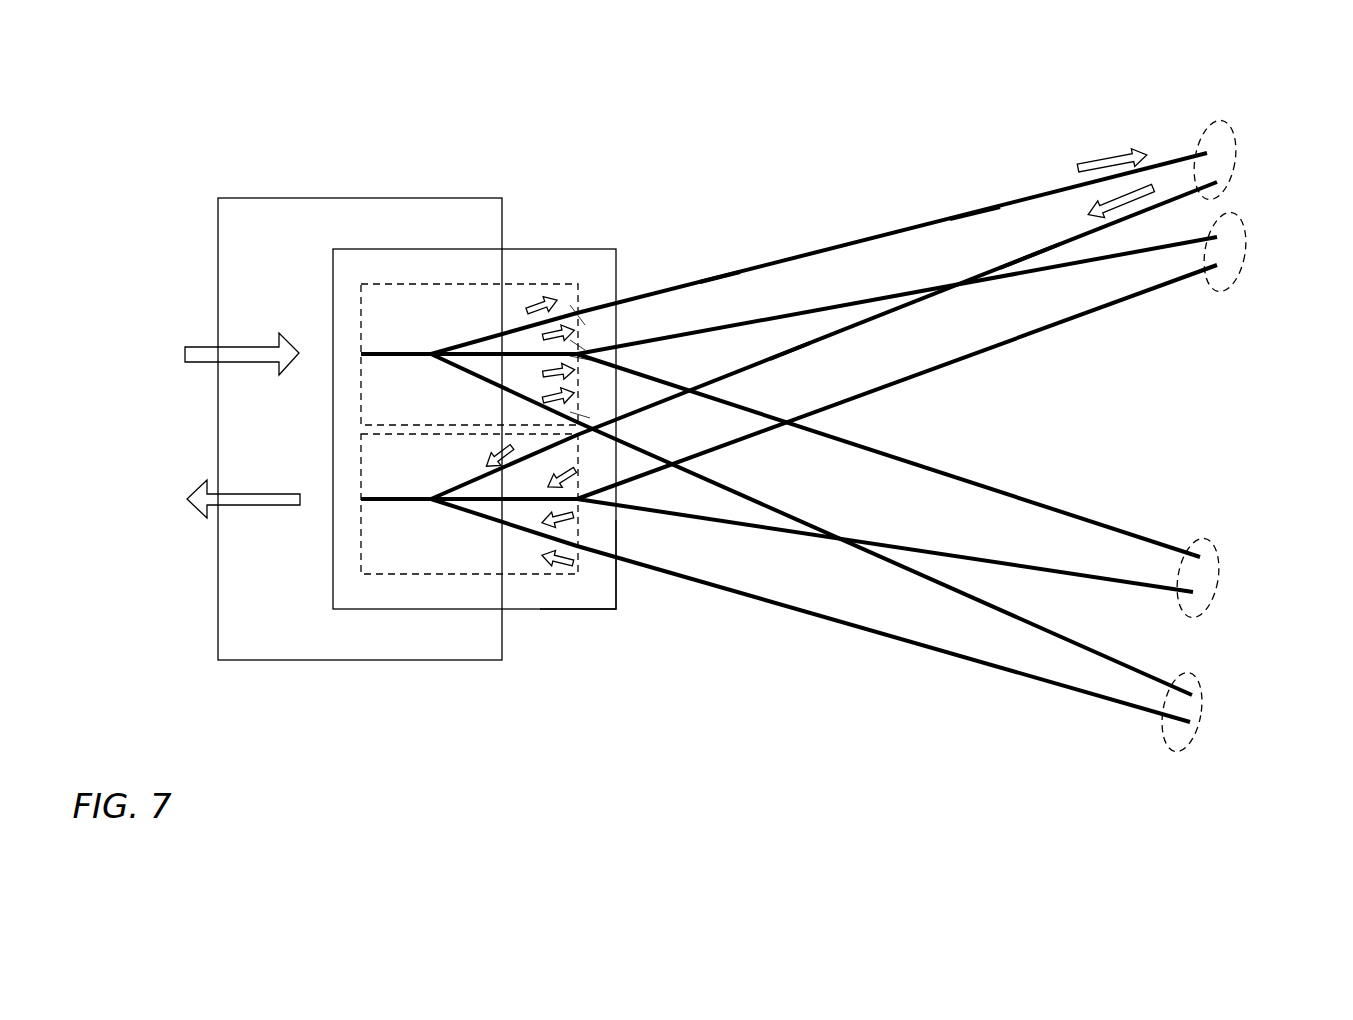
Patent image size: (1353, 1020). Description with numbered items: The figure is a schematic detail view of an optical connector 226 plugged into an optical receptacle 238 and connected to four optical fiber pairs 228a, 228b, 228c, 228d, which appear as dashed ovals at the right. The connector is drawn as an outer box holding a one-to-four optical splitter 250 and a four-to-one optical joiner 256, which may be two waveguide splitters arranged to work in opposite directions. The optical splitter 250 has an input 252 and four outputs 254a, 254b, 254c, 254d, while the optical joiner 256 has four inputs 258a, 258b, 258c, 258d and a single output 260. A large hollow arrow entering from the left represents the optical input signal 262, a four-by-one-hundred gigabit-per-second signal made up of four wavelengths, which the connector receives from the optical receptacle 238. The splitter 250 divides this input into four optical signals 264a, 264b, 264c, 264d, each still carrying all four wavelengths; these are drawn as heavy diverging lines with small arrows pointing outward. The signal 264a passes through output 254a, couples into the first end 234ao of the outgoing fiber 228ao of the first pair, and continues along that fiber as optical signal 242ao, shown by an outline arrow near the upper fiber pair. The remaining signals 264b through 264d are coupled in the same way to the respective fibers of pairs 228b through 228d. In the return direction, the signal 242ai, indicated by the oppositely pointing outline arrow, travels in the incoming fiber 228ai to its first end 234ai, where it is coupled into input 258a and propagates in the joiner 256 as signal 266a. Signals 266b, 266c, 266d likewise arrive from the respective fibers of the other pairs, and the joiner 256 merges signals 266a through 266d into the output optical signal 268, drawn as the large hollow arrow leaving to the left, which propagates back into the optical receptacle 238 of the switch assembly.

The optical connector 226 is at (605, 610).
The optical fiber pair 228a is at (1237, 163).
The optical fiber pair 228b is at (1247, 255).
The optical fiber pair 228c is at (1220, 581).
The optical fiber pair 228d is at (1203, 715).
The fiber 228ao is at (977, 213).
The fiber 228ai is at (1030, 255).
The first end 234ao is at (722, 277).
The first end 234ai is at (790, 349).
The optical receptacle 238 is at (290, 662).
The optical signal 242ao is at (1112, 152).
The signal 242ai is at (1127, 215).
The optical splitter 250 is at (457, 283).
The input 252 is at (363, 353).
The output 254a is at (585, 348).
The output 254b is at (592, 351).
The output 254c is at (598, 354).
The output 254d is at (590, 412).
The optical joiner 256 is at (512, 576).
The input 258a is at (582, 438).
The input 258b is at (580, 501).
The input 258c is at (582, 503).
The input 258d is at (580, 548).
The output 260 is at (362, 501).
The optical input signal 262 is at (255, 345).
The optical signal 264a is at (542, 300).
The optical signal 264b is at (576, 313).
The optical signal 264c is at (543, 368).
The optical signal 264d is at (543, 394).
The signal 266a is at (487, 456).
The signal 266b is at (548, 477).
The signal 266c is at (530, 520).
The signal 266d is at (557, 572).
The output optical signal 268 is at (184, 497).